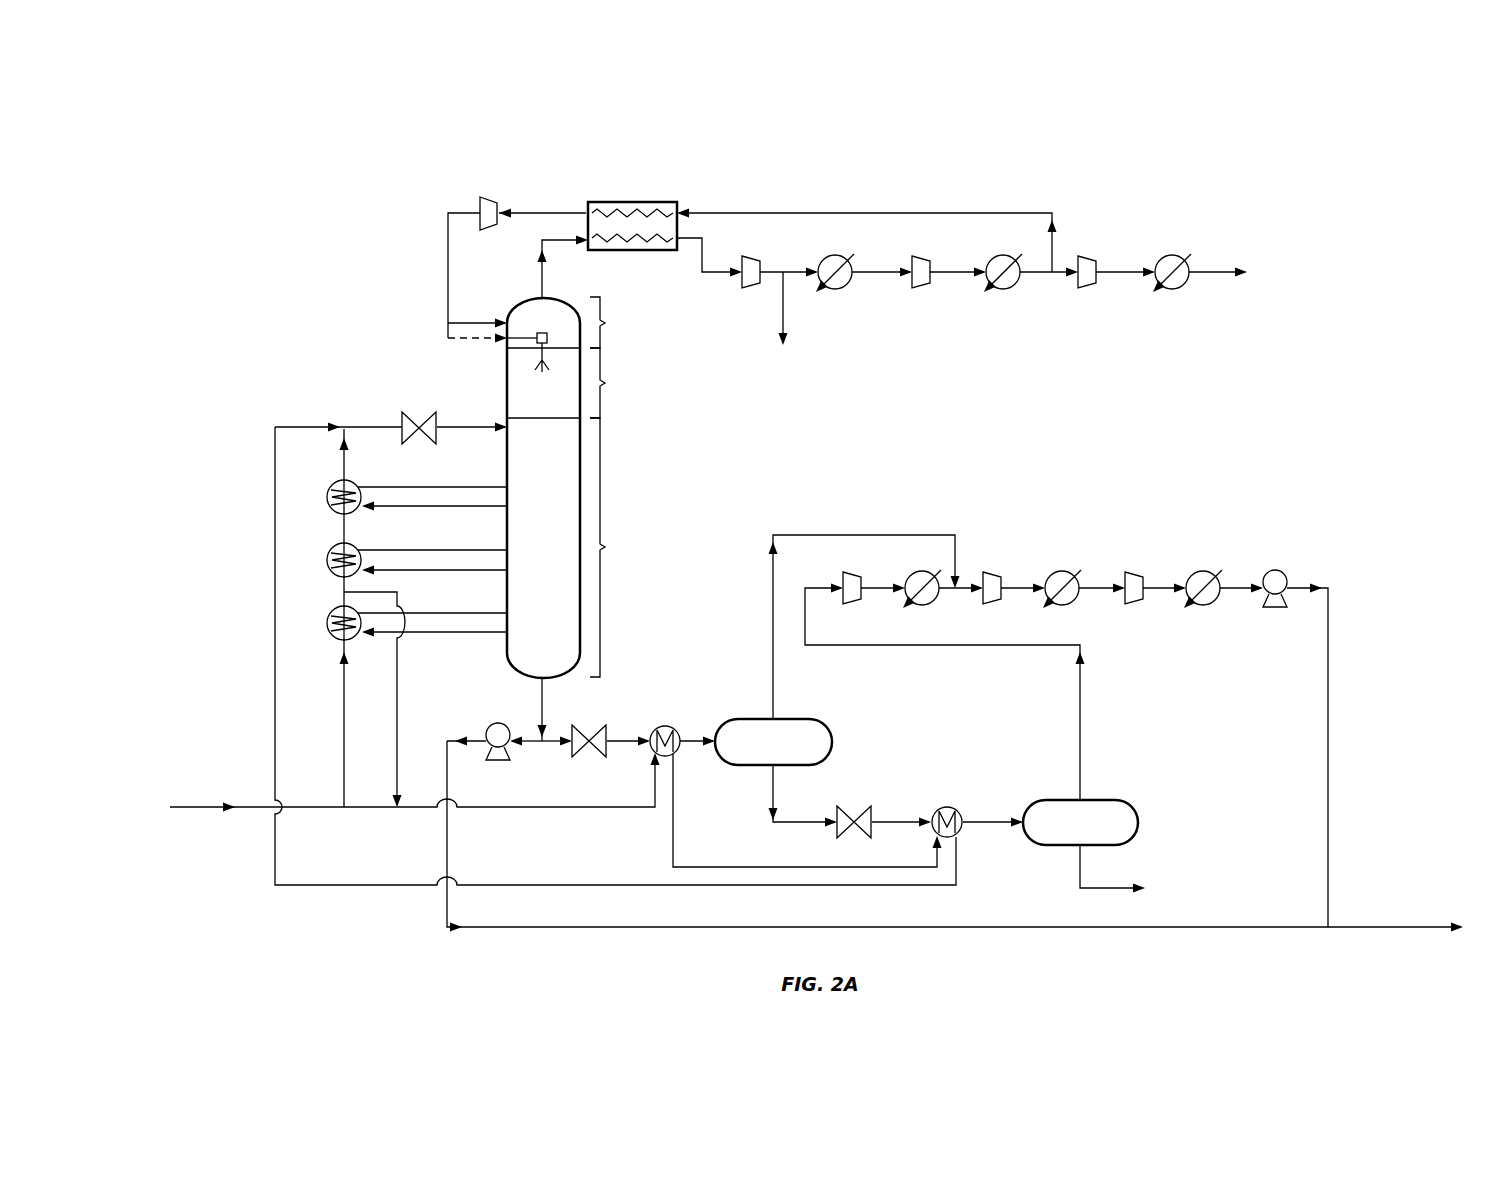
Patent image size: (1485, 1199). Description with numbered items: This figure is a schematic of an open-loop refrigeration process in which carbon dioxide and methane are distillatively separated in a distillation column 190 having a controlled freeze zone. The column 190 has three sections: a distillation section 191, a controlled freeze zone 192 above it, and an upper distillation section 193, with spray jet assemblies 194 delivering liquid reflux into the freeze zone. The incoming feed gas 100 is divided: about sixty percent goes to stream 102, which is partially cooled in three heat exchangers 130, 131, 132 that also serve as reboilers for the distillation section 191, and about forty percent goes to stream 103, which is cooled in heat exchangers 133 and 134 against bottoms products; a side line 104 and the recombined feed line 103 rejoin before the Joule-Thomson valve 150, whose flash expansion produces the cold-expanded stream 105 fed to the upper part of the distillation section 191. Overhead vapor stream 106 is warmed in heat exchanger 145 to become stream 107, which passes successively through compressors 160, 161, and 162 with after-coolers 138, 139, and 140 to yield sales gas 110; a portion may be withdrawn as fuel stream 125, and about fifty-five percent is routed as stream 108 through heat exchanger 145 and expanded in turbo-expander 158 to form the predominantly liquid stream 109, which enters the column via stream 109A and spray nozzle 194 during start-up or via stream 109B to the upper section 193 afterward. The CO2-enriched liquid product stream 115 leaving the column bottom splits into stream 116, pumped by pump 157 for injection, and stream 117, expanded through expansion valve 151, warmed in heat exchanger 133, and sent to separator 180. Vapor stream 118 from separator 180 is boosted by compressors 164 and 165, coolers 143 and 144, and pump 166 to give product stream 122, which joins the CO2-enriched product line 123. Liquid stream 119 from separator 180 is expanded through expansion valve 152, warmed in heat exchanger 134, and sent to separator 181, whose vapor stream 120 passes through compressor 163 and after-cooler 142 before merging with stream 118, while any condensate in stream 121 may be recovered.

The feed gas 100 is at (214, 808).
The stream 102 is at (343, 729).
The stream 103 is at (379, 810).
The side stream line 104 is at (405, 700).
The cold-expanded stream 105 is at (452, 427).
The overhead vapor stream 106 is at (538, 282).
The residue vapor stream 107 is at (699, 266).
The stream 108 is at (782, 213).
The stream 109 is at (446, 255).
The stream 109A is at (442, 335).
The stream 109B is at (442, 322).
The gas 110 is at (1212, 270).
The CO2-enriched liquid product stream 115 is at (544, 714).
The stream 116 is at (520, 746).
The stream 117 is at (559, 748).
The stream 118 is at (768, 648).
The stream 119 is at (768, 786).
The stream 120 is at (1080, 702).
The stream 121 is at (1080, 868).
The product stream 122 is at (1328, 776).
The CO2 enriched product stream 123 is at (1380, 925).
The stream 125 is at (792, 306).
The heat exchanger 130 is at (330, 611).
The heat exchanger 131 is at (330, 548).
The heat exchanger 132 is at (330, 485).
The heat exchanger 133 is at (660, 722).
The heat exchanger 134 is at (942, 804).
The after-cooler 138 is at (826, 260).
The after-cooler 139 is at (991, 260).
The after-cooler 140 is at (1163, 258).
The after-cooler 142 is at (924, 573).
The cooler 143 is at (1056, 568).
The cooler 144 is at (1197, 566).
The heat exchanger 145 is at (609, 202).
The Joule-Thomson valve 150 is at (404, 414).
The expansion valve 151 is at (592, 730).
The expansion valve 152 is at (852, 810).
The pump 157 is at (489, 722).
The turbo-expander 158 is at (491, 203).
The compressor 160 is at (751, 259).
The compressor 161 is at (916, 259).
The compressor 162 is at (1086, 259).
The compressor 163 is at (861, 573).
The compressor 164 is at (988, 576).
The compressor 165 is at (1130, 575).
The pump 166 is at (1275, 570).
The separator 180 is at (796, 718).
The separator 181 is at (1101, 800).
The distillation column 190 is at (506, 474).
The distillation section 191 is at (617, 547).
The controlled freeze zone 192 is at (617, 383).
The upper distillation section 193 is at (617, 322).
The spray nozzle 194 is at (523, 362).